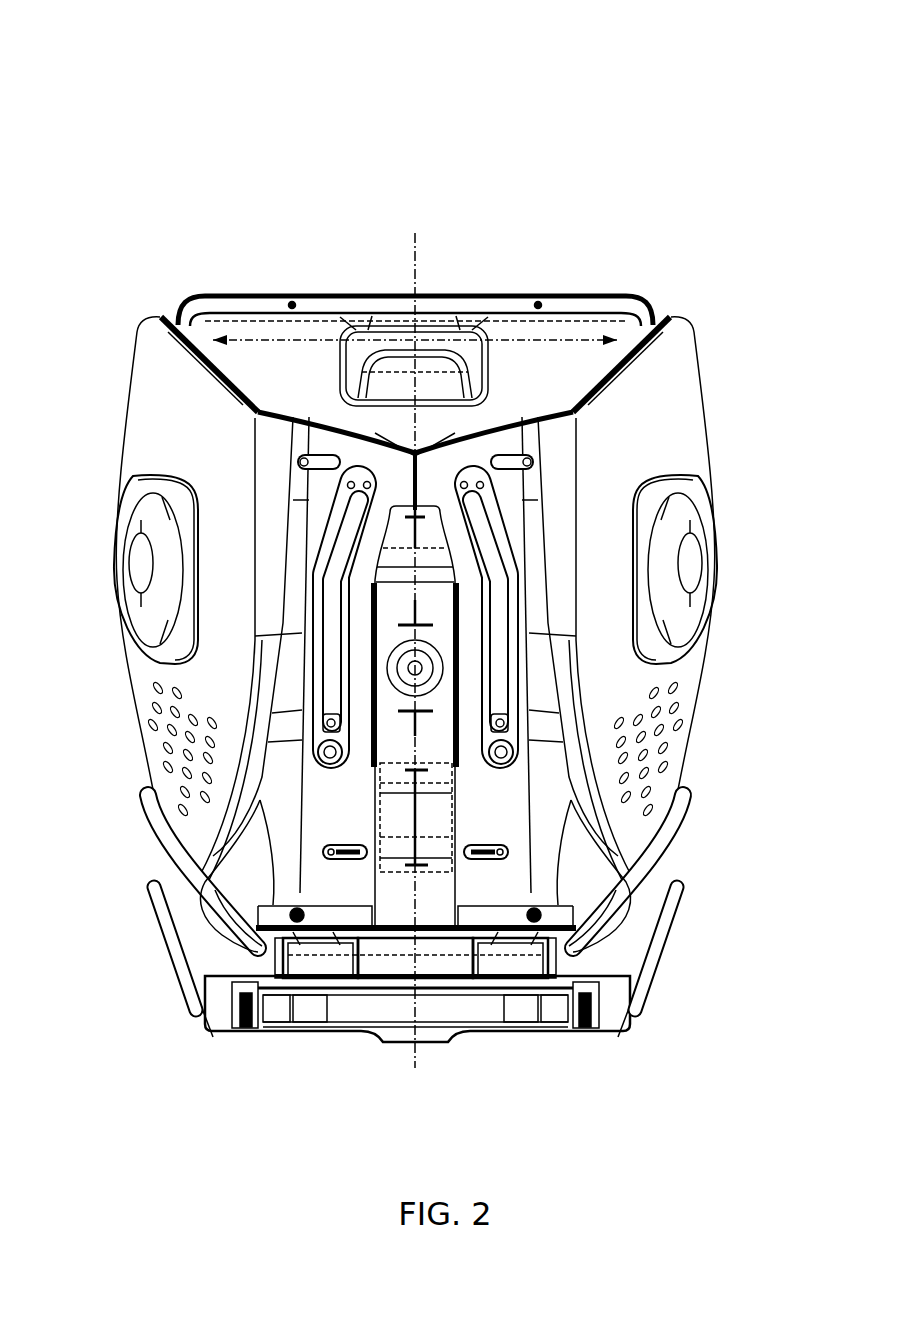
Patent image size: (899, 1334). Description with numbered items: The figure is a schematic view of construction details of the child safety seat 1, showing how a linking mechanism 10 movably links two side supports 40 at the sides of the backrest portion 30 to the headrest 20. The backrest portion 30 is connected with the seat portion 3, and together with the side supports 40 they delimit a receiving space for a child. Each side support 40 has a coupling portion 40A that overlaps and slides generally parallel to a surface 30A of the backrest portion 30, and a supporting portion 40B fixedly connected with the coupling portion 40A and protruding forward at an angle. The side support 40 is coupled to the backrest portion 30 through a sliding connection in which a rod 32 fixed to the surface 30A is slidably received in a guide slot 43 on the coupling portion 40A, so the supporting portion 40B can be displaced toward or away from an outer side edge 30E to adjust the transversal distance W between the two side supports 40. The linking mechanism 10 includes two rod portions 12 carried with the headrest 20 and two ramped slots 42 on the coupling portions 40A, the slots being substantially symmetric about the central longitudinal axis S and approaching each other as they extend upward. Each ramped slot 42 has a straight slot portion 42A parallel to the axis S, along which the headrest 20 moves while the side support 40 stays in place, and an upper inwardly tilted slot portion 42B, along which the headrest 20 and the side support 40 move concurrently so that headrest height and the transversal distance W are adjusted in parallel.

The child safety seat 1 is at (88, 76).
The seat portion 3 is at (613, 1045).
The linking mechanism 10 is at (467, 766).
The rod portion 12 is at (296, 748).
The headrest 20 is at (243, 294).
The backrest portion 30 is at (374, 294).
The surface of the backrest portion 30A is at (315, 972).
The outer side edge 30E is at (294, 300).
The rod 32 is at (298, 460).
The side support 40 is at (151, 316).
The coupling portion 40A is at (307, 820).
The supporting portion 40B is at (145, 370).
The ramped slot 42 is at (419, 623).
The slot portion 42A is at (308, 613).
The slot portion 42B is at (318, 542).
The guide slot 43 is at (185, 483).
The central longitudinal axis S is at (418, 250).
The transversal distance W is at (580, 330).